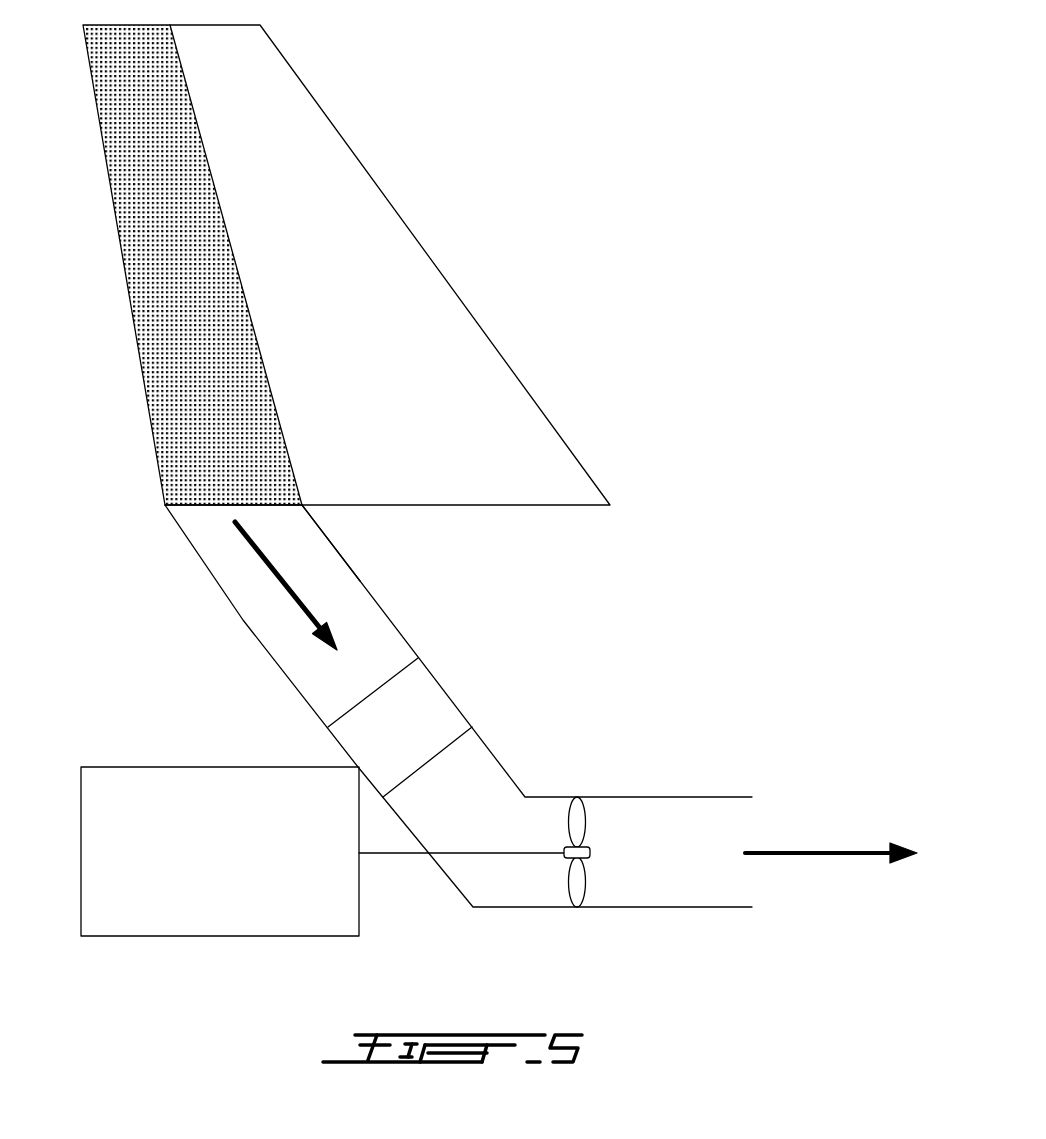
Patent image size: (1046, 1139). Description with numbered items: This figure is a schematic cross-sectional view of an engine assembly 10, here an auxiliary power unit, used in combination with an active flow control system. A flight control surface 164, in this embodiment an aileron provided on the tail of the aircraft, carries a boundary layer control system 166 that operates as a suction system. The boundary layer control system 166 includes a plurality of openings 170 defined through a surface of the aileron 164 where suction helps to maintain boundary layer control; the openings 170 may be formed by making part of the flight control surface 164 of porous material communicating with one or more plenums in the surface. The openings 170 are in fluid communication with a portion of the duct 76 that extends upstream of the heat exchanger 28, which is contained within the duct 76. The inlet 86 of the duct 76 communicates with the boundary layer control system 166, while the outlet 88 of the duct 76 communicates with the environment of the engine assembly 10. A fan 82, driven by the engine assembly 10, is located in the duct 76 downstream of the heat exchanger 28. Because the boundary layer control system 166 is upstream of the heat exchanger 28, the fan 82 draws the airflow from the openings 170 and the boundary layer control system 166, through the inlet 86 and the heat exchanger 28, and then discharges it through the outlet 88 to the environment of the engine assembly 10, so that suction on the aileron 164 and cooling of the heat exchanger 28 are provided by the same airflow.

The engine assembly 10 is at (145, 797).
The heat exchanger 28 is at (420, 710).
The duct 76 is at (366, 635).
The fan 82 is at (580, 803).
The inlet 86 is at (280, 518).
The outlet 88 is at (717, 838).
The flight control surface 164 is at (218, 248).
The boundary layer control system 166 is at (205, 483).
The openings 170 is at (138, 237).